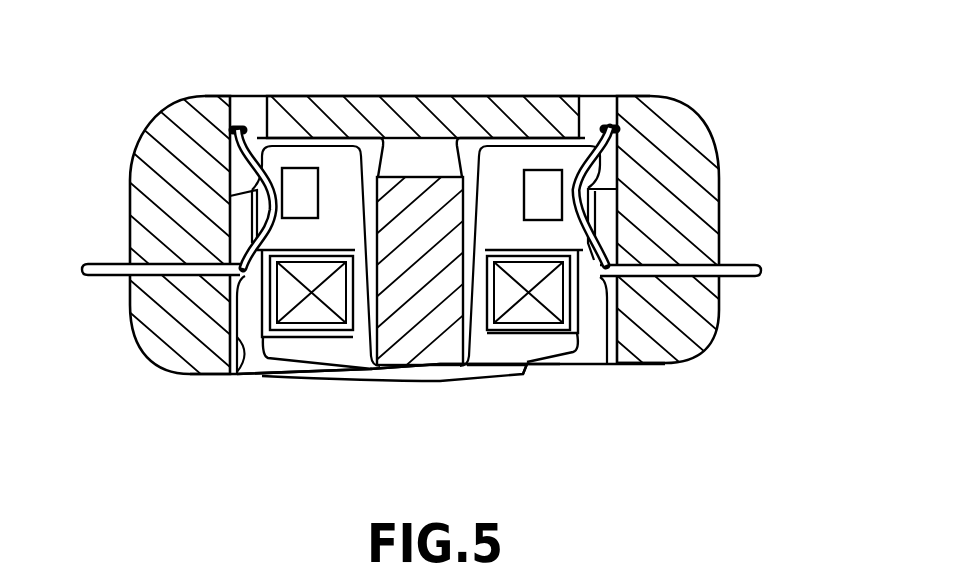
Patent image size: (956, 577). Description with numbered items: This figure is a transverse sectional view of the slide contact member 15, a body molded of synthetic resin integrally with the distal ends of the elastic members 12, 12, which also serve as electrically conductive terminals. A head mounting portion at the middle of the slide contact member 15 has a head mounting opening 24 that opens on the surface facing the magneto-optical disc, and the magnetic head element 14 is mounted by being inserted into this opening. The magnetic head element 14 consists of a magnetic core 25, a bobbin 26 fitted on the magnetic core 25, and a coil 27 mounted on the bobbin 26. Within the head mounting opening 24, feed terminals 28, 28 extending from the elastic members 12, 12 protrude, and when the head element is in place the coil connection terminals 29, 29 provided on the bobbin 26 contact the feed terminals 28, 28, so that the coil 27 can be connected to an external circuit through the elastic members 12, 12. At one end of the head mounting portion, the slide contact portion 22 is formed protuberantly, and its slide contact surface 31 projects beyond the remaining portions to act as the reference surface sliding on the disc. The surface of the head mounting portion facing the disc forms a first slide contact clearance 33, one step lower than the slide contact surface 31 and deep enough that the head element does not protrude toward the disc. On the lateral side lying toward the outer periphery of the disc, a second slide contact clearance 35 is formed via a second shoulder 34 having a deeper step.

The elastic members 12 is at (100, 263).
The magnetic head element 14 is at (505, 163).
The slide contact member 15 is at (680, 97).
The slide contact portion 22 is at (360, 380).
The head mounting opening 24 is at (240, 362).
The magnetic core 25 is at (418, 183).
The bobbin 26 is at (492, 343).
The coil 27 is at (305, 313).
The feed terminals 28 is at (249, 98).
The coil connection terminals 29 is at (303, 182).
The slide contact surface 31 is at (400, 380).
The first slide contact clearance 33 is at (517, 378).
The second shoulder 34 is at (530, 366).
The second slide contact clearance 35 is at (657, 363).